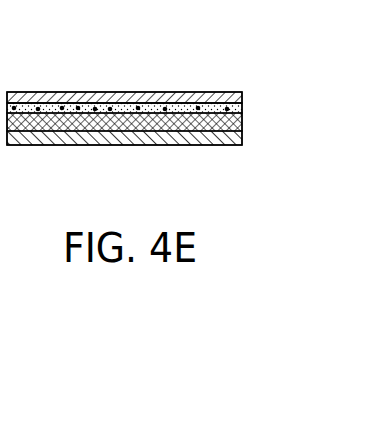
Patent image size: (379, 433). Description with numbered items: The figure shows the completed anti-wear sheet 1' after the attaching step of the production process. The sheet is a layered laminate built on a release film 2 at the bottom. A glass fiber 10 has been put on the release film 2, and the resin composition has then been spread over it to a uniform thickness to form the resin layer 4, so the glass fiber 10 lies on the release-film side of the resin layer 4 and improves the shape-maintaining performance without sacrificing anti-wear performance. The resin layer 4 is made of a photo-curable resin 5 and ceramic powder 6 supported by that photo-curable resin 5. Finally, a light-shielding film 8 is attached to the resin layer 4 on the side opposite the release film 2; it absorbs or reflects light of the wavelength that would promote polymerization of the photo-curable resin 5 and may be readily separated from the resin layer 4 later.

The anti-wear sheet 1' is at (124, 83).
The release film 2 is at (173, 145).
The resin layer 4 is at (243, 104).
The photo-curable resin 5 is at (110, 110).
The ceramic powder 6 is at (78, 107).
The light-shielding film 8 is at (172, 92).
The glass fiber 10 is at (243, 120).